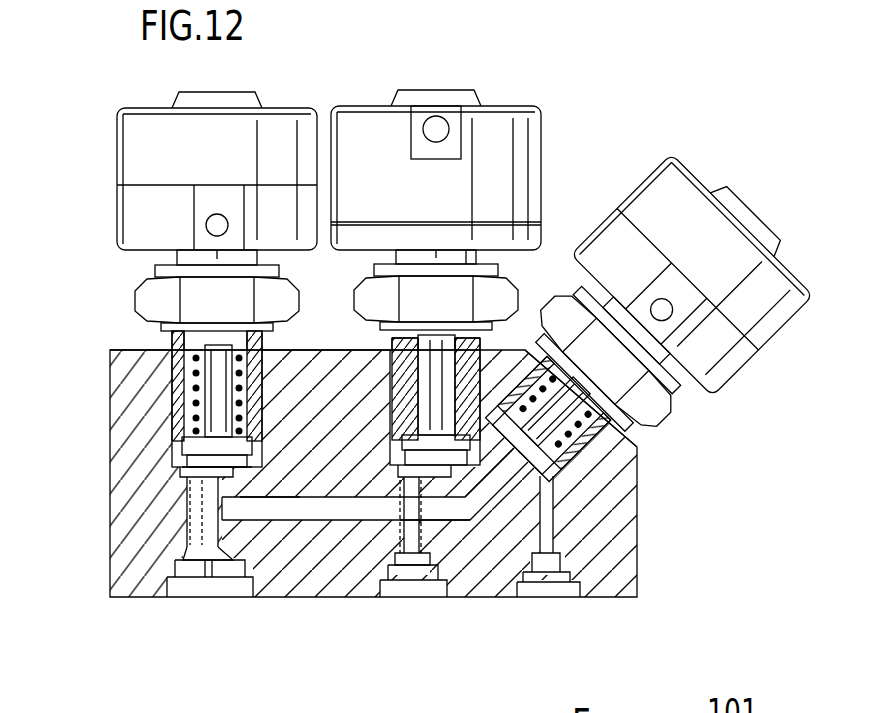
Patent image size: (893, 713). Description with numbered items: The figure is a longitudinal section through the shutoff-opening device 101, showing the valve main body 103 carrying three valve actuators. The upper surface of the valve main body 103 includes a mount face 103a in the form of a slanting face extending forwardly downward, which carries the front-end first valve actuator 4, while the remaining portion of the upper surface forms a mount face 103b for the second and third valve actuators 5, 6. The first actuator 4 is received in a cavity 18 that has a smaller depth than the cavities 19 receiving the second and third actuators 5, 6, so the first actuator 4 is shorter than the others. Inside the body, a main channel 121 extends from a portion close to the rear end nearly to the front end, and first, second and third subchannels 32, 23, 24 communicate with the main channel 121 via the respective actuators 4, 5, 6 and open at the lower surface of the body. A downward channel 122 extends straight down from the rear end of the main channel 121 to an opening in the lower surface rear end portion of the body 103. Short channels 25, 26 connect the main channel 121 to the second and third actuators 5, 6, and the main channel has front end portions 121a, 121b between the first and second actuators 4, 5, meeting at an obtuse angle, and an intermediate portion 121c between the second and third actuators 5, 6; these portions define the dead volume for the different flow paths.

The shutoff-opening device 101 is at (605, 134).
The first valve actuator 4 is at (693, 184).
The second valve actuator 5 is at (508, 124).
The third valve actuator 6 is at (293, 110).
The cavity 18 is at (584, 452).
The cavities 19 is at (178, 388).
The second subchannel 23 is at (392, 545).
The third subchannel 24 is at (168, 560).
The short channel 25 is at (437, 492).
The short channel 26 is at (222, 556).
The first subchannel 32 is at (557, 540).
The valve main body 103 is at (132, 446).
The mount face 103a is at (640, 447).
The mount face 103b is at (130, 350).
The main channel 121 is at (337, 517).
The front end portion of main channel 121a is at (461, 518).
The front end portion of main channel 121b is at (491, 493).
The intermediate portion of main channel 121c is at (281, 517).
The downward channel 122 is at (222, 572).